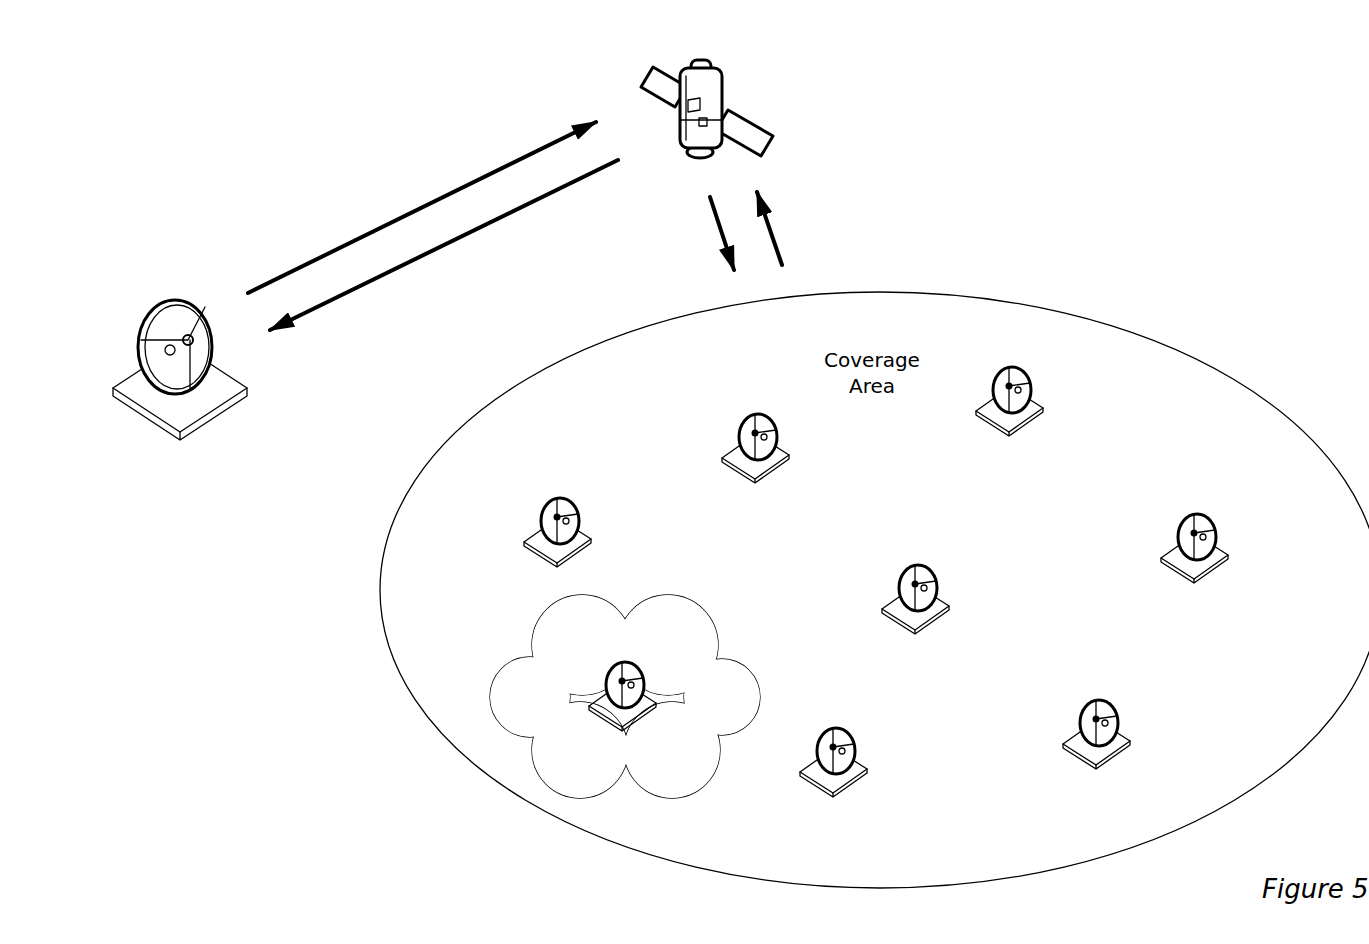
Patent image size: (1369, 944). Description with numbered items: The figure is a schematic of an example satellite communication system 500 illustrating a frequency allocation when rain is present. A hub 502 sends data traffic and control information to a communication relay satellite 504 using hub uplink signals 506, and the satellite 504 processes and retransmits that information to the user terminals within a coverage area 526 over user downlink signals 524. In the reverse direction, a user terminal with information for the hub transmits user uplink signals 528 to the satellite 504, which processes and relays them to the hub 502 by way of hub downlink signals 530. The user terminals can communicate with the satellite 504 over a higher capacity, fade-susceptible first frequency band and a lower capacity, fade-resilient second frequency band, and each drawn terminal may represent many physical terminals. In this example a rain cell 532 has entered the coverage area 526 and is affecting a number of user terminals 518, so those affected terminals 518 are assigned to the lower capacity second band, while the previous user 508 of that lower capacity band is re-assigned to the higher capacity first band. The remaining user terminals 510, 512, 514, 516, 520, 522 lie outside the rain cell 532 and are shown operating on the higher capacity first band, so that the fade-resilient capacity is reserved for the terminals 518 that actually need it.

The satellite communication system 500 is at (203, 701).
The hub 502 is at (136, 414).
The communication relay satellite 504 is at (744, 106).
The hub uplink signals 506 is at (422, 207).
The user terminal 508 is at (985, 428).
The user terminal 510 is at (732, 476).
The user terminal 512 is at (553, 494).
The user terminal 514 is at (891, 626).
The user terminal 516 is at (1171, 575).
The user terminals affected by rain cell 518 is at (641, 727).
The user terminal 520 is at (807, 789).
The user terminal 522 is at (1071, 761).
The user downlink signals 524 is at (675, 240).
The coverage area 526 is at (603, 417).
The user uplink signals 528 is at (808, 223).
The hub downlink signals 530 is at (444, 245).
The rain cell 532 is at (509, 644).